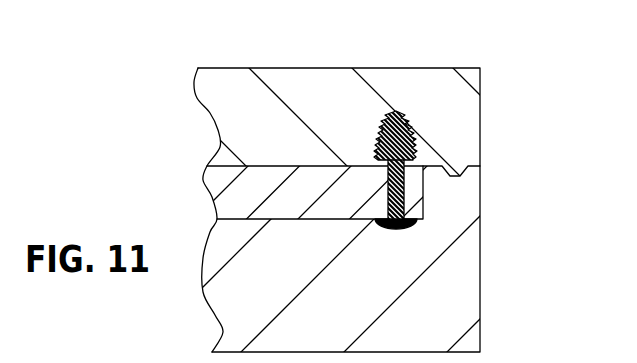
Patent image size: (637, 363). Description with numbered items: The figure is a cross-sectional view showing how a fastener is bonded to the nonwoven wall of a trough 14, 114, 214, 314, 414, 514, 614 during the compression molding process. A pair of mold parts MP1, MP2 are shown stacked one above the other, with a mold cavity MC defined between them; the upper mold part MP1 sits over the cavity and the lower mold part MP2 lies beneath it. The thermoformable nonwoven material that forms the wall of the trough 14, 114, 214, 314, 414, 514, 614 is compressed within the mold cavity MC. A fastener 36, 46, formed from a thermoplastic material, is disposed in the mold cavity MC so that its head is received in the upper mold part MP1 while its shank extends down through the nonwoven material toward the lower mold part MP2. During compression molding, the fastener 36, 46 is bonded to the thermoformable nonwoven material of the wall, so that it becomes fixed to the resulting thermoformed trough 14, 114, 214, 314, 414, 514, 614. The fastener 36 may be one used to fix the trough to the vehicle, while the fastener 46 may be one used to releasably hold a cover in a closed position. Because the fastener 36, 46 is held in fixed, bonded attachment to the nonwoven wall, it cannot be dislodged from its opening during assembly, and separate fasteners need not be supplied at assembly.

The trough 14 is at (325, 181).
The trough 114 is at (325, 181).
The trough 214 is at (325, 181).
The trough 314 is at (325, 181).
The trough 414 is at (325, 181).
The trough 514 is at (325, 181).
The trough 614 is at (300, 195).
The mold part MP1 is at (232, 103).
The mold cavity MC is at (240, 197).
The mold part MP2 is at (256, 305).
The fastener 36 is at (393, 181).
The fastener 46 is at (398, 117).